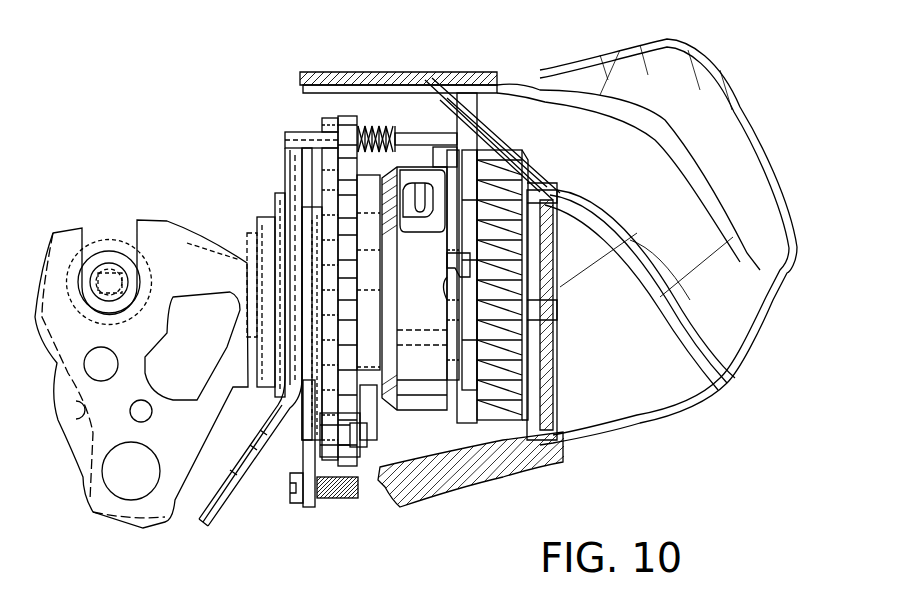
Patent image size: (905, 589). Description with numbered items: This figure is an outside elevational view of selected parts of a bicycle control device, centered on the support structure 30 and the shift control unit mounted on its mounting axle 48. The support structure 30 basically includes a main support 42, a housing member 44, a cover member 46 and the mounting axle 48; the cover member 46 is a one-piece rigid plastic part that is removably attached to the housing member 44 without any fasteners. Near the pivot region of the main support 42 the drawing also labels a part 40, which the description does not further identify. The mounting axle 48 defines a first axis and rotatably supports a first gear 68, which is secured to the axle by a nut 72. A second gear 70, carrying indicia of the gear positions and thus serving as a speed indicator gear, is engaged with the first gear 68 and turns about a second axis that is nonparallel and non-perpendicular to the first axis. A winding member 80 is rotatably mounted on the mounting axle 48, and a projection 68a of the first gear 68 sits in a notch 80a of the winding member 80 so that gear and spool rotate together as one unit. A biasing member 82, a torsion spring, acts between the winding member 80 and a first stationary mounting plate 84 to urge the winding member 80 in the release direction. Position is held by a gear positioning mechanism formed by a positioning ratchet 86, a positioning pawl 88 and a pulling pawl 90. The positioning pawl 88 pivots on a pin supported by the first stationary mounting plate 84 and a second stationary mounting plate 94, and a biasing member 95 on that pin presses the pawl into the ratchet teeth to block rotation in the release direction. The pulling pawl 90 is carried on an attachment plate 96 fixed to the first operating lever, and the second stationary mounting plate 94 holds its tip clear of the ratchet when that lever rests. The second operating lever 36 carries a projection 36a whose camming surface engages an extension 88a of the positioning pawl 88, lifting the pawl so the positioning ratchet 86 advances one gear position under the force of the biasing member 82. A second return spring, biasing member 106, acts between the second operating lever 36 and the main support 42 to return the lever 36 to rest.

The support structure 30 is at (720, 410).
The second operating lever 36 is at (245, 478).
The projection 36a is at (286, 152).
The bushing 40 is at (111, 245).
The main support 42 is at (43, 268).
The housing member 44 is at (640, 425).
The cover member 46 is at (740, 108).
The mounting axle 48 is at (247, 263).
The first gear 68 is at (510, 413).
The projection 68a is at (465, 262).
The second gear 70 is at (500, 140).
The nut 72 is at (547, 332).
The winding member 80 is at (417, 413).
The notch 80a is at (452, 283).
The biasing member 82 is at (452, 385).
The first stationary mounting plate 84 is at (478, 400).
The positioning ratchet 86 is at (367, 390).
The positioning pawl 88 is at (348, 116).
The extension 88a is at (292, 130).
The pulling pawl 90 is at (345, 500).
The second stationary mounting plate 94 is at (330, 118).
The biasing member 95 is at (387, 122).
The attachment plate 96 is at (318, 210).
The biasing member 106 is at (272, 200).